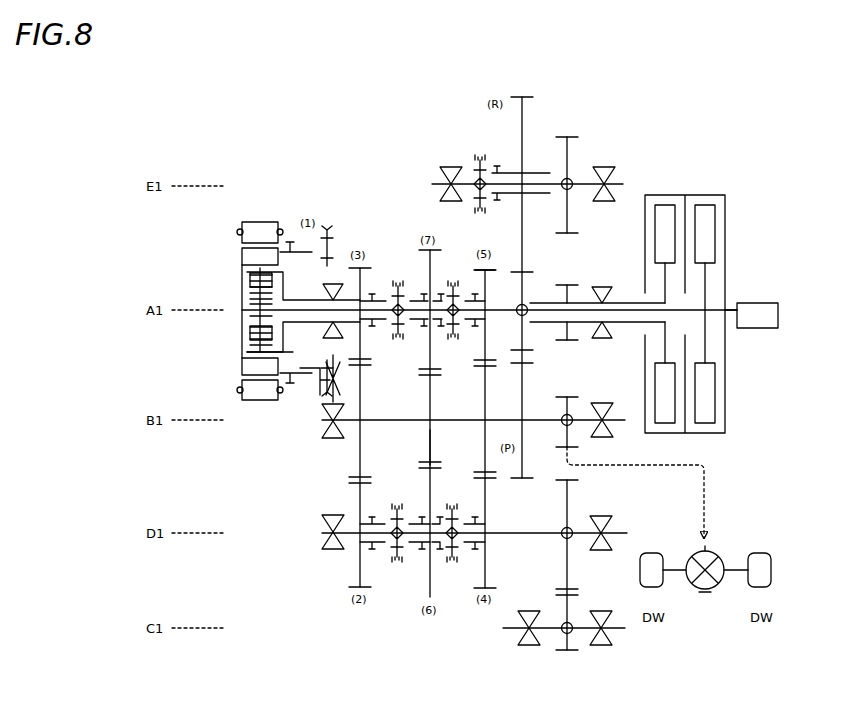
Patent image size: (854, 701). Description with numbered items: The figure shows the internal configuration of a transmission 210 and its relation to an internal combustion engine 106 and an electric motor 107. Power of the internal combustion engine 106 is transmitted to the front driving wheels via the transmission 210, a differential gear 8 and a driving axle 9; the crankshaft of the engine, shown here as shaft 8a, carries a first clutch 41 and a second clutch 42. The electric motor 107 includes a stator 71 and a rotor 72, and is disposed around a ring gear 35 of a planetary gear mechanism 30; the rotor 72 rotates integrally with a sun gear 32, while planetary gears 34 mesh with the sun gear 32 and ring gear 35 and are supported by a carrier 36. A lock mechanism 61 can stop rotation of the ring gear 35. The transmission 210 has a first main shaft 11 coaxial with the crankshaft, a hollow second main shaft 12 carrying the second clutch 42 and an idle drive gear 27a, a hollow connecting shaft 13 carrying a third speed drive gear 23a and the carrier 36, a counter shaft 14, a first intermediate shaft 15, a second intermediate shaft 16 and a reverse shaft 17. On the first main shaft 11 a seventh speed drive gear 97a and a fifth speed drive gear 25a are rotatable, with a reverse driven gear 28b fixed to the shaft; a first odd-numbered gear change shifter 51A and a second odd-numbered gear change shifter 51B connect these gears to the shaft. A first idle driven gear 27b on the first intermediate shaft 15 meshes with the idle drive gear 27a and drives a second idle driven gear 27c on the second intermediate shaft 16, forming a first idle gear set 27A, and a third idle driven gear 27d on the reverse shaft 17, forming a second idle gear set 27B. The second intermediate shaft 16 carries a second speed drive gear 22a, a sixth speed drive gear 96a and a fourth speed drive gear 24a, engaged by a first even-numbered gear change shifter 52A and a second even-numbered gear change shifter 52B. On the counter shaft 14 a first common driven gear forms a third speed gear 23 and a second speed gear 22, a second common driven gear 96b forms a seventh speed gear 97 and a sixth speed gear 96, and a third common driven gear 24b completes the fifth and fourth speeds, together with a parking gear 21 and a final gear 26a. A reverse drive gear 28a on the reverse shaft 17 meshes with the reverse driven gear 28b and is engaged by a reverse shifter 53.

The electric motor 107 is at (224, 178).
The stator 71 is at (240, 228).
The rotor 72 is at (240, 252).
The planetary gears 34 is at (248, 282).
The planetary gear mechanism 30 is at (240, 292).
The sun gear 32 is at (248, 305).
The ring gear 35 is at (250, 352).
The carrier 36 is at (323, 311).
The lock mechanism 61 is at (302, 400).
The connecting shaft 13 is at (323, 378).
The third speed drive gear 23a is at (350, 262).
The third speed gear 23 is at (368, 384).
The second speed gear 22 is at (368, 470).
The second speed drive gear 22a is at (355, 585).
The seventh speed drive gear 97a is at (425, 246).
The second common driven gear 96b is at (432, 376).
The sixth speed gear 96 is at (439, 459).
The sixth speed drive gear 96a is at (435, 471).
The seventh speed gear 97 is at (460, 372).
The third common driven gear 24b is at (488, 381).
The fourth speed drive gear 24a is at (486, 479).
The fifth speed drive gear 25a is at (488, 268).
The first odd-numbered gear change shifter 51A is at (400, 282).
The second odd-numbered gear change shifter 51B is at (453, 282).
The first even-numbered gear change shifter 52A is at (396, 577).
The second even-numbered gear change shifter 52B is at (456, 577).
The reverse shaft 17 is at (455, 170).
The reverse shifter 53 is at (474, 133).
The transmission 210 is at (420, 112).
The reverse drive gear 28a is at (523, 96).
The reverse driven gear 28b is at (563, 284).
The third idle driven gear 27d is at (567, 136).
The second idle gear set 27B is at (595, 154).
The second clutch 42 is at (663, 195).
The first clutch 41 is at (702, 195).
The second main shaft 12 is at (627, 300).
The first main shaft 11 is at (627, 322).
The internal combustion engine 106 is at (757, 298).
The input shaft 8a is at (730, 303).
The idle drive gear 27a is at (573, 342).
The final gear 26a is at (565, 396).
The parking gear 21 is at (561, 424).
The counter shaft 14 is at (572, 444).
The second intermediate shaft 16 is at (560, 528).
The first idle gear set 27A is at (582, 492).
The second idle driven gear 27c is at (570, 589).
The first intermediate shaft 15 is at (545, 628).
The first idle driven gear 27b is at (567, 650).
The differential gear 8 is at (721, 559).
The driving axle 9 is at (667, 572).